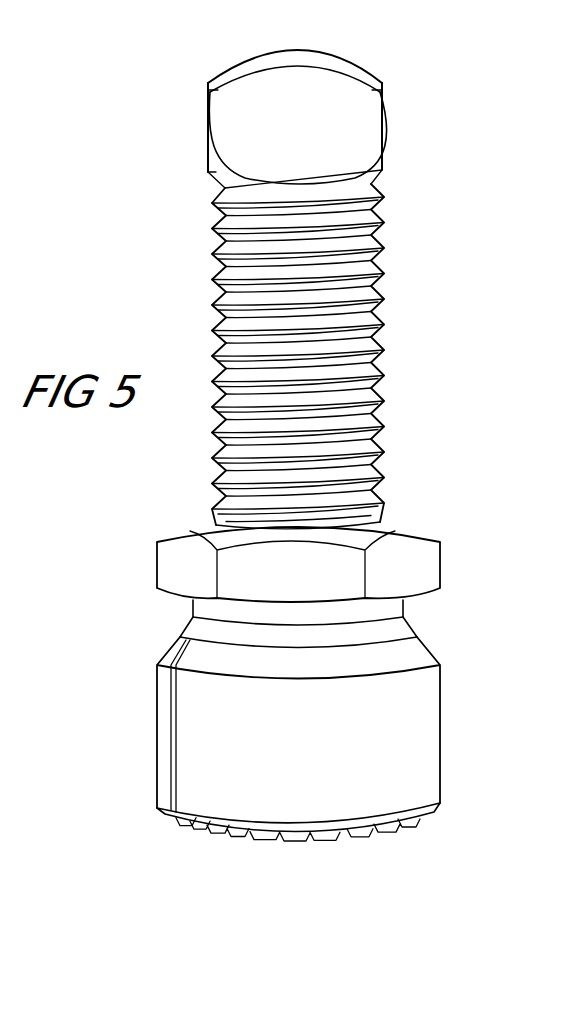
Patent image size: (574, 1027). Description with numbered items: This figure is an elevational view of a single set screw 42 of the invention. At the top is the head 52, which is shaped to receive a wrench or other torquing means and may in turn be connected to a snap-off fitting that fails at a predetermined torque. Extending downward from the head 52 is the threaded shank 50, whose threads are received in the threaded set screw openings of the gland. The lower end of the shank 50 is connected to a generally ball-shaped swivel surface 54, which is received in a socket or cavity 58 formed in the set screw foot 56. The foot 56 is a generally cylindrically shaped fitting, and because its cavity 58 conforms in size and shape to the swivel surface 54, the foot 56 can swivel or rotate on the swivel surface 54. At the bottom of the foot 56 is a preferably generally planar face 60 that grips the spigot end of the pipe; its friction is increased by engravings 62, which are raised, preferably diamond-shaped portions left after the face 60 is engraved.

The set screw 42 is at (378, 70).
The head 52 is at (347, 137).
The threaded shank 50 is at (347, 370).
The swivel surface 54 is at (392, 627).
The socket or cavity 58 is at (417, 637).
The set screw foot 56 is at (380, 723).
The face 60 is at (400, 828).
The engravings 62 is at (327, 843).